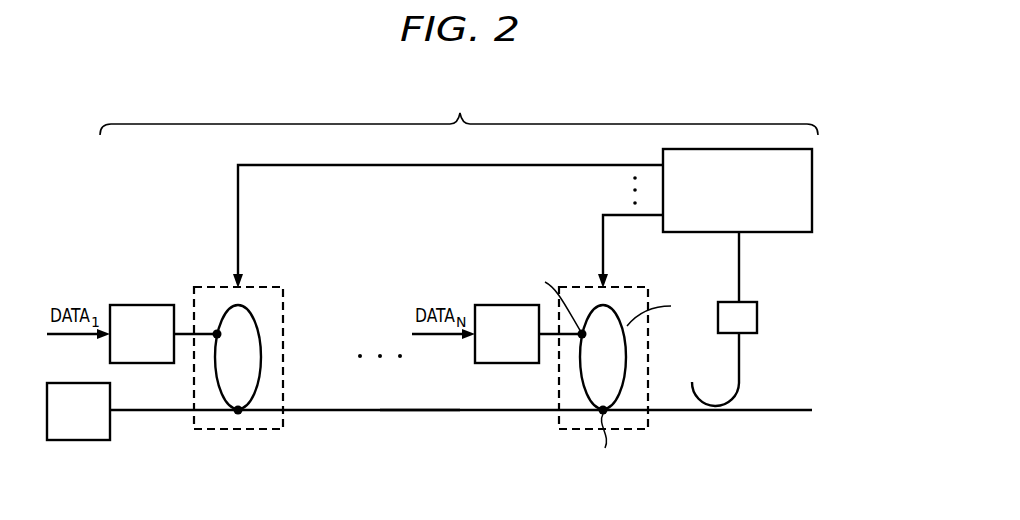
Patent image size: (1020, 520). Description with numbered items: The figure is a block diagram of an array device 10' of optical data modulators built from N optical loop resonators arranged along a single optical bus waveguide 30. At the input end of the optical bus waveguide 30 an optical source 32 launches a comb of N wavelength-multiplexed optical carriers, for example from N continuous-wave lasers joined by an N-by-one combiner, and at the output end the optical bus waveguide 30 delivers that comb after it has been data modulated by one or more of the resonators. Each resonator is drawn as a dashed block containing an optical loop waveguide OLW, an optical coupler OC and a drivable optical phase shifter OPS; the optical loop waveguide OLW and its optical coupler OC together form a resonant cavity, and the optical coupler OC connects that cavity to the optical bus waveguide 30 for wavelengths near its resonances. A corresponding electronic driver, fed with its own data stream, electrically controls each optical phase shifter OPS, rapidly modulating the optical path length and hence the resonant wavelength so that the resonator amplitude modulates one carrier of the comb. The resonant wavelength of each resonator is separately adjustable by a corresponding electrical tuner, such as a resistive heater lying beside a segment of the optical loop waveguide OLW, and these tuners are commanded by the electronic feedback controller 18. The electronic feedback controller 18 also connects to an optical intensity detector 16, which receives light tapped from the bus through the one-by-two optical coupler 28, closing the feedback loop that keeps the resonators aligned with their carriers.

The array device 10' is at (459, 110).
The electronic feedback controller 18 is at (747, 203).
The optical intensity detector 16 is at (757, 318).
The 1×2 optical coupler 28 is at (714, 432).
The optical source 32 is at (89, 423).
The optical bus waveguide 30 is at (419, 412).
The optical phase shifter OPS is at (216, 332).
The optical loop waveguide OLW is at (262, 326).
The optical coupler OC is at (238, 414).